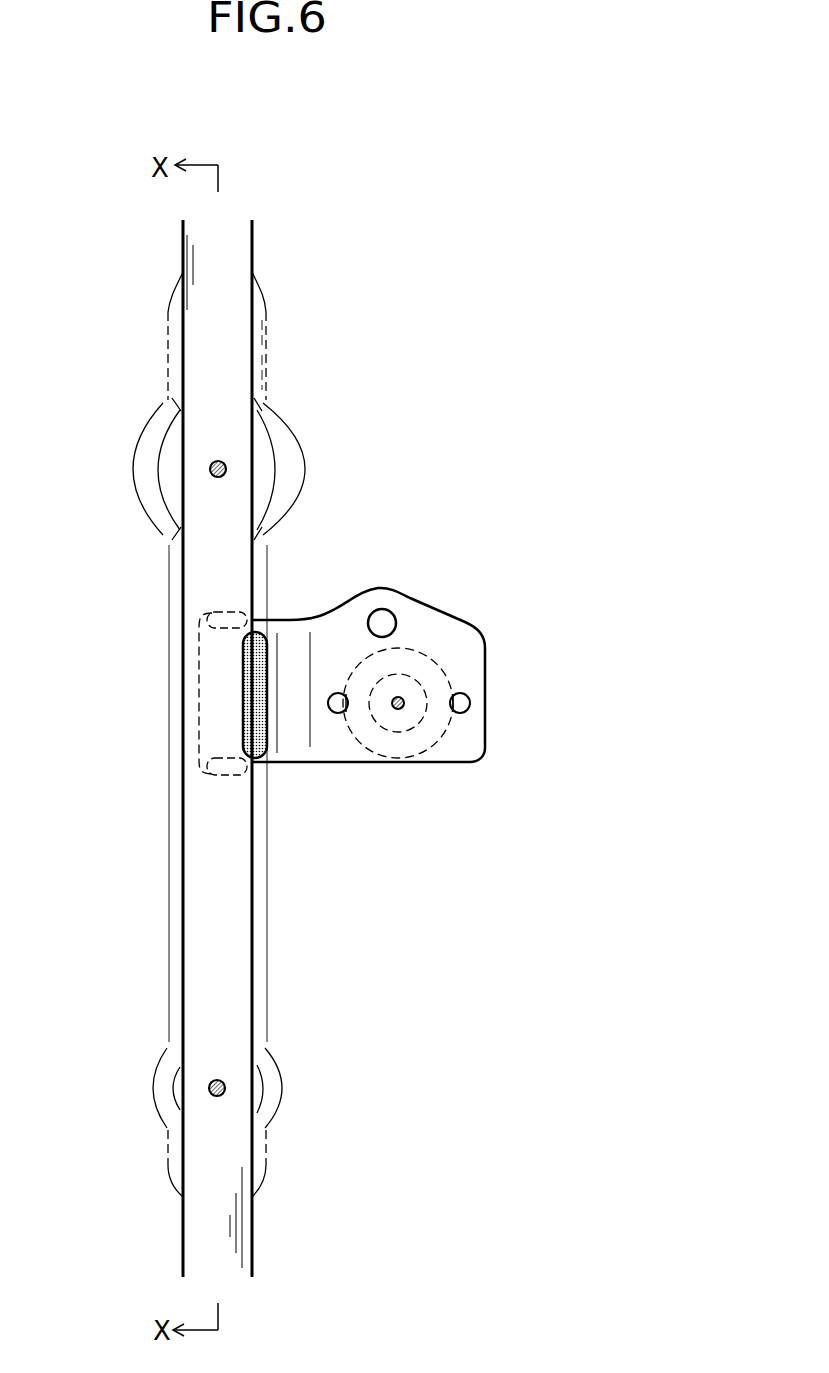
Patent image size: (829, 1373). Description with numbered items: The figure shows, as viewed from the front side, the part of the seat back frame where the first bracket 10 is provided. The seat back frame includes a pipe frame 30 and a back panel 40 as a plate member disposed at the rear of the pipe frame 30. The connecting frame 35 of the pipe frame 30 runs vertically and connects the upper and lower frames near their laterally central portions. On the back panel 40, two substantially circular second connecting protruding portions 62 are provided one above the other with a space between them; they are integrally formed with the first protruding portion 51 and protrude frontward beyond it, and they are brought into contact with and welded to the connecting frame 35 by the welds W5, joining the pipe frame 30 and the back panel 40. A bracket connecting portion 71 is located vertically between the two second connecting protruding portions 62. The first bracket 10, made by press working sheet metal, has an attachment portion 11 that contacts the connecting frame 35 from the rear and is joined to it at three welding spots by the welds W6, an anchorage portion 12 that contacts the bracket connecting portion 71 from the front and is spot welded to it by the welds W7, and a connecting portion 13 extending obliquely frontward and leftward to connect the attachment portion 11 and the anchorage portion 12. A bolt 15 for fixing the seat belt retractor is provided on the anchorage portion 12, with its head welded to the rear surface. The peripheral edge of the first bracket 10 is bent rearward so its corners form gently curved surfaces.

The first bracket 10 is at (443, 586).
The attachment portion 11 is at (217, 667).
The anchorage portion 12 is at (463, 663).
The connecting portion 13 is at (297, 722).
The bolt 15 is at (378, 611).
The pipe frame 30 is at (174, 248).
The connecting frame 35 is at (181, 343).
The back panel 40 is at (462, 1219).
The first protruding portion 51 is at (262, 347).
The second connecting protruding portion 62 is at (259, 448).
The bracket connecting portion 71 is at (433, 727).
The weld W5 is at (226, 469).
The weld W6 is at (218, 612).
The weld W7 is at (398, 710).